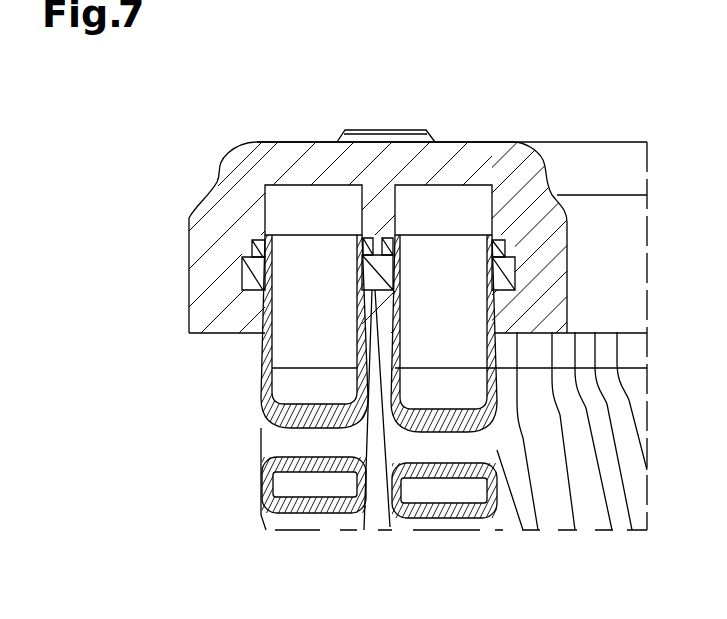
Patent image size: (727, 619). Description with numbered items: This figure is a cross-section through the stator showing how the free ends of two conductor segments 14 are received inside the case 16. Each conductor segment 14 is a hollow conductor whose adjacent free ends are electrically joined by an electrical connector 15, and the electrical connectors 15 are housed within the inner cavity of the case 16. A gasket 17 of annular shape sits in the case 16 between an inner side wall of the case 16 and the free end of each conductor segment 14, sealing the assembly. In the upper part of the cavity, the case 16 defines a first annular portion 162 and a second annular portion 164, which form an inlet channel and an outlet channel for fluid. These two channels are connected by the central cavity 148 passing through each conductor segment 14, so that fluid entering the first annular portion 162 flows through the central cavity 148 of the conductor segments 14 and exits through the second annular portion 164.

The conductor segment 14 is at (245, 426).
The electrical connector 15 is at (228, 301).
The case 16 is at (170, 278).
The gasket 17 is at (238, 233).
The central cavity 148 is at (264, 490).
The first annular portion 162 is at (459, 200).
The second annular portion 164 is at (308, 200).